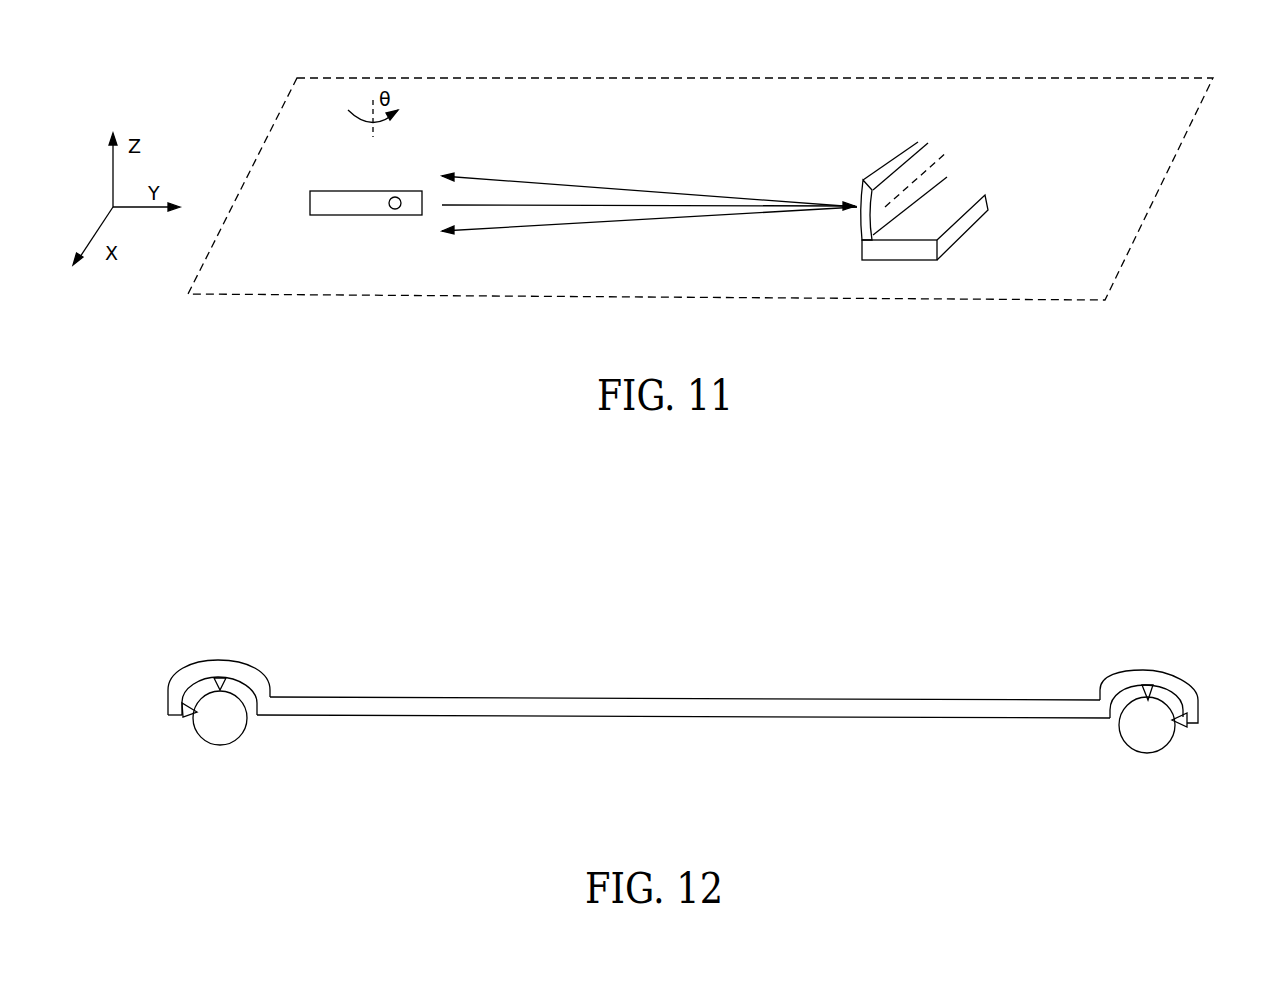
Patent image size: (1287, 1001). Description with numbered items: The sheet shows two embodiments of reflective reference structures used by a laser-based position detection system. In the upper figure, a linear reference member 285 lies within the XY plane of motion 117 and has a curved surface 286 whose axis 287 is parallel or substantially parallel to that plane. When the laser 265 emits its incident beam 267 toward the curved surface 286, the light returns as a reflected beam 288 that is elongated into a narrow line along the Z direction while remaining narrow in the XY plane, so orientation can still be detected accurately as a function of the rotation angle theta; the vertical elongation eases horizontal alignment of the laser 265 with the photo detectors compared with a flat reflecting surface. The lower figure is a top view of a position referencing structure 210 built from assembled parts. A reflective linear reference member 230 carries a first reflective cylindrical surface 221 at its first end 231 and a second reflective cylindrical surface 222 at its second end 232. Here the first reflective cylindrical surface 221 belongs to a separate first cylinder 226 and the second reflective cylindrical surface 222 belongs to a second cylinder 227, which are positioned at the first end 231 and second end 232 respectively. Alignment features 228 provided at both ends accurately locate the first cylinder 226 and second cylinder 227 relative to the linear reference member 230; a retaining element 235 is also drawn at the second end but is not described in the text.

In FIG. 11, the plane of motion 117 is at (1145, 235).
In FIG. 11, the laser 265 is at (396, 197).
In FIG. 11, the incident beam 267 is at (455, 207).
In FIG. 11, the linear reference member 285 is at (918, 142).
In FIG. 11, the curved surface 286 is at (855, 217).
In FIG. 11, the axis 287 is at (940, 160).
In FIG. 11, the reflected beam 288 is at (565, 182).
In FIG. 12, the position referencing structure 210 is at (428, 600).
In FIG. 12, the first reflective cylindrical surface 221 is at (218, 747).
In FIG. 12, the second reflective cylindrical surface 222 is at (1135, 750).
In FIG. 12, the first cylinder 226 is at (188, 752).
In FIG. 12, the second cylinder 227 is at (1176, 760).
In FIG. 12, the alignment features 228 is at (182, 722).
In FIG. 12, the linear reference member 230 is at (682, 717).
In FIG. 12, the first end 231 is at (257, 718).
In FIG. 12, the second end 232 is at (1110, 720).
In FIG. 12, the retaining tab 235 is at (1177, 727).